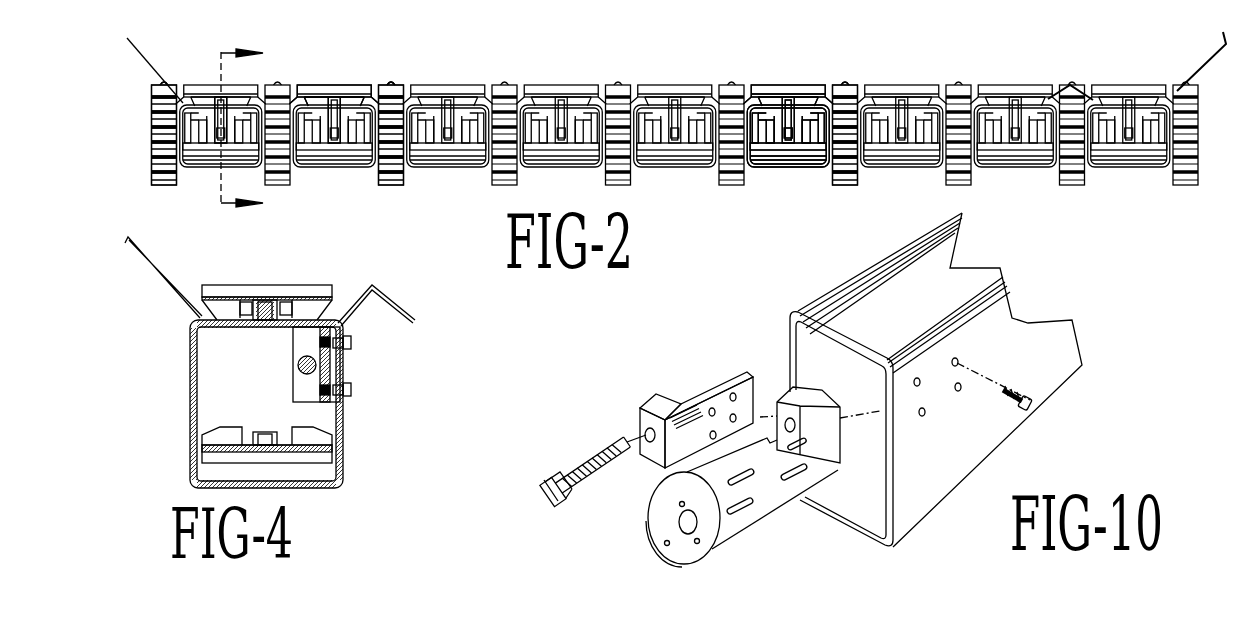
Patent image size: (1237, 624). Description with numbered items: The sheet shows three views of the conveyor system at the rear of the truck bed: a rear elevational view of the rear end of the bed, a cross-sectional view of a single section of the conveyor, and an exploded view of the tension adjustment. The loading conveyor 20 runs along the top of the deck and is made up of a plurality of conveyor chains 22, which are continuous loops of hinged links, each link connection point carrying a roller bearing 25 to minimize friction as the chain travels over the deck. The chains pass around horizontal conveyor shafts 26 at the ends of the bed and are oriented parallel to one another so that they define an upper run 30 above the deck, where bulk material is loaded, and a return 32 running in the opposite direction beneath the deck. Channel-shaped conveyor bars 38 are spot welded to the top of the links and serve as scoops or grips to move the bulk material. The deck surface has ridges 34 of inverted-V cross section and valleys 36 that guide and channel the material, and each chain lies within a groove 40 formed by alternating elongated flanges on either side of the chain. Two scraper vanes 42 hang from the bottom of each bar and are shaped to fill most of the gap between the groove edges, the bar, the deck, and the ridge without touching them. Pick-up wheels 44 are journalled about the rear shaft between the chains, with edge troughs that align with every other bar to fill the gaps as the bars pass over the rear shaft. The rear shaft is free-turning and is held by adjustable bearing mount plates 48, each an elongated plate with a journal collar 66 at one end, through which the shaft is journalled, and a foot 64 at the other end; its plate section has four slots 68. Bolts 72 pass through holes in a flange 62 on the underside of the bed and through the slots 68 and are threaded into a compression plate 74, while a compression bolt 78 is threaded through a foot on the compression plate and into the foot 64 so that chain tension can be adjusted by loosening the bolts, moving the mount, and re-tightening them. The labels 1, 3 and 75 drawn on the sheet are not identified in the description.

In FIG. 2, the conveyor apparatus 1 is at (150, 64).
In FIG. 2, the section line 3- 3 is at (252, 128).
In FIG. 2, the loading conveyor 20 is at (472, 66).
In FIG. 2, the conveyor chains 22 is at (215, 130).
In FIG. 4, the conveyor chains 22 is at (285, 320).
In FIG. 2, the roller bearing 25 is at (327, 100).
In FIG. 4, the roller bearing 25 is at (263, 313).
In FIG. 2, the conveyor shafts 26 is at (142, 172).
In FIG. 2, the upper run 30 is at (858, 60).
In FIG. 2, the return 32 is at (800, 196).
In FIG. 2, the ridges 34 is at (406, 92).
In FIG. 4, the ridges 34 is at (375, 287).
In FIG. 2, the valleys 36 is at (358, 97).
In FIG. 4, the valleys 36 is at (200, 318).
In FIG. 2, the conveyor bars 38 is at (311, 93).
In FIG. 4, the conveyor bars 38 is at (253, 290).
In FIG. 4, the grooves 40 is at (243, 303).
In FIG. 4, the scraper vanes 42 is at (222, 308).
In FIG. 2, the pick-up wheels 44 is at (388, 185).
In FIG. 10, the bearing mount plate 48 is at (650, 530).
In FIG. 10, the flange 62 is at (937, 467).
In FIG. 10, the foot 64 is at (793, 393).
In FIG. 10, the journal collar 66 is at (687, 550).
In FIG. 10, the slots 68 is at (758, 503).
In FIG. 10, the bolts 72 is at (1037, 407).
In FIG. 10, the compression plate 74 is at (703, 398).
In FIG. 10, the end block 75 is at (648, 402).
In FIG. 10, the compression bolt 78 is at (582, 468).